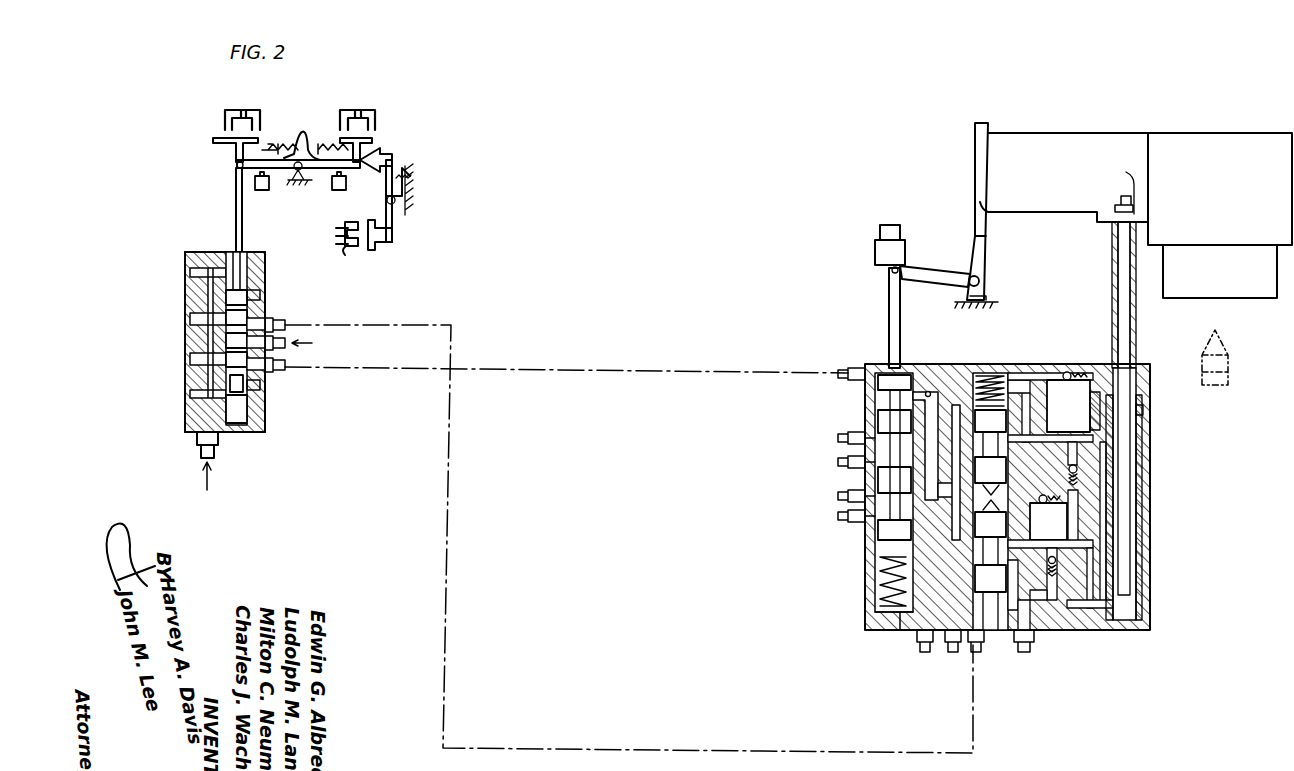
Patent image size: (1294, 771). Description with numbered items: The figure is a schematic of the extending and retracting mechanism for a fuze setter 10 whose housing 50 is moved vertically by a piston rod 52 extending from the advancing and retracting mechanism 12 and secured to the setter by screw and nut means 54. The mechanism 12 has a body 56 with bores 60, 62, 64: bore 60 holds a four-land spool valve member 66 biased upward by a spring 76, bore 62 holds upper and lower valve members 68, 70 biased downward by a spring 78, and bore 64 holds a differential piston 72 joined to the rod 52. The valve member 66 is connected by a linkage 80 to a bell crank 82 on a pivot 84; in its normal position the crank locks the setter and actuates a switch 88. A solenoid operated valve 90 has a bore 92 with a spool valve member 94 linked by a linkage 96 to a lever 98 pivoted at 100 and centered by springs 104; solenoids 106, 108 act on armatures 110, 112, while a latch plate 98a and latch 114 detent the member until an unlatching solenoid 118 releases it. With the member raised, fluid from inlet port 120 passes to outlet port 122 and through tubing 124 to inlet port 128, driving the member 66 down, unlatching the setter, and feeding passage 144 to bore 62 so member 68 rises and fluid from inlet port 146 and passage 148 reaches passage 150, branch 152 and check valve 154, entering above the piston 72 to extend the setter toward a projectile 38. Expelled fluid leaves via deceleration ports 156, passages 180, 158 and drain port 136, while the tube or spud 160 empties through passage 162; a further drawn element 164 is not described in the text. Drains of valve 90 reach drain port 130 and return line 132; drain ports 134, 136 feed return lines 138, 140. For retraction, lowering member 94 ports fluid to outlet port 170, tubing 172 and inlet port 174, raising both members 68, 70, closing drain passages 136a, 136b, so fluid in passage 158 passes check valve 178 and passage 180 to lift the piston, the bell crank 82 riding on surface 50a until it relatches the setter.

The fuze setter 10 is at (1235, 134).
The advancing and retracting mechanism 12 is at (1178, 458).
The projectile 38 is at (1229, 356).
The housing 50 is at (1088, 134).
The surface of housing 50a is at (976, 164).
The piston rod 52 is at (1136, 335).
The screw and nut means 54 is at (1114, 203).
The body 56 is at (1142, 570).
The bore 60 is at (870, 596).
The bore 62 is at (1023, 642).
The bore 64 is at (1140, 508).
The spool type hydraulic valve member 66 is at (907, 489).
The upper spool type valve member 68 is at (991, 483).
The lower spool type valve member 70 is at (991, 524).
The differential piston 72 is at (1138, 432).
The spring 76 is at (875, 568).
The spring 78 is at (995, 375).
The linkage 80 is at (888, 316).
The bell crank 82 is at (946, 261).
The pivot 84 is at (984, 280).
The switch 88 is at (902, 231).
The solenoid operated valve 90 is at (178, 262).
The bore 92 is at (241, 414).
The spool type hydraulic valve member 94 is at (226, 335).
The linkage 96 is at (238, 200).
The lever 98 is at (238, 162).
The latch plate 98a is at (380, 153).
The pivot 100 is at (298, 178).
The springs 104 is at (305, 132).
The solenoid 106 is at (258, 92).
The solenoid 108 is at (398, 100).
The armature 110 is at (230, 137).
The armature 112 is at (370, 140).
The latch 114 is at (396, 236).
The unlatching solenoid 118 is at (354, 251).
The inlet port 120 is at (284, 352).
The outlet port 122 is at (262, 382).
The conduit or tubing 124 is at (409, 370).
The inlet port 128 is at (862, 380).
The drain port 130 is at (210, 420).
The return line 132 is at (212, 448).
The drain port 134 is at (920, 625).
The drain port 136 is at (1045, 640).
The drain passage 136a is at (999, 487).
The drain passage 136b is at (996, 597).
The return line 138 is at (918, 632).
The return line 140 is at (1023, 652).
The passage 144 is at (932, 375).
The inlet port 146 is at (950, 632).
The passage 148 is at (966, 375).
The passage 150 is at (1054, 411).
The branch 152 is at (1050, 375).
The check valve 154 is at (1070, 375).
The deceleration ports 156 is at (1058, 592).
The passage 158 is at (1050, 521).
The tube or spud 160 is at (1128, 488).
The passage 162 is at (1058, 608).
The check valve 164 is at (1058, 499).
The outlet port 170 is at (262, 312).
The tubing 172 is at (407, 321).
The inlet port 174 is at (988, 647).
The check valve 178 is at (1050, 622).
The passage 180 is at (1095, 620).